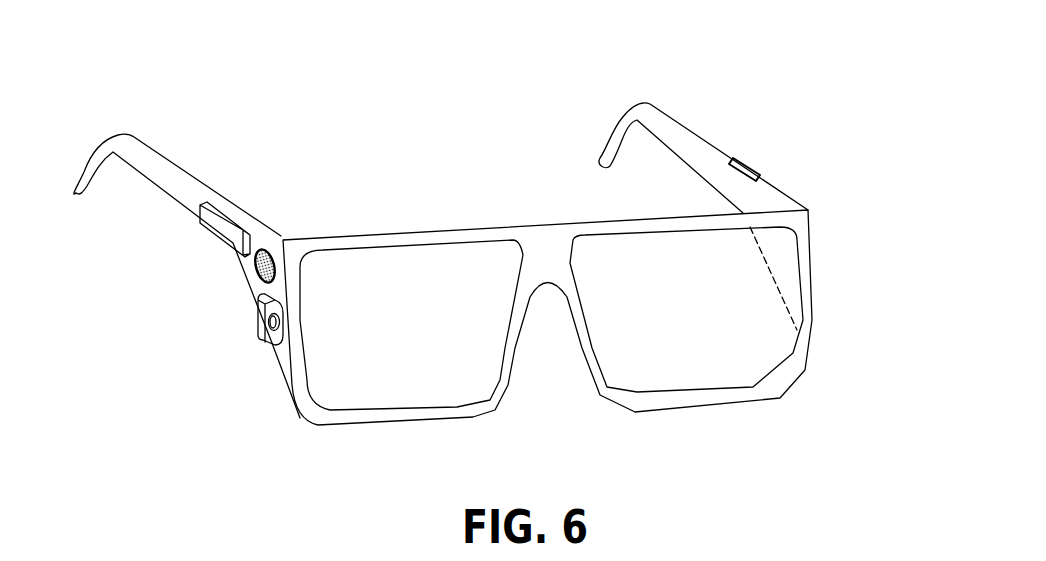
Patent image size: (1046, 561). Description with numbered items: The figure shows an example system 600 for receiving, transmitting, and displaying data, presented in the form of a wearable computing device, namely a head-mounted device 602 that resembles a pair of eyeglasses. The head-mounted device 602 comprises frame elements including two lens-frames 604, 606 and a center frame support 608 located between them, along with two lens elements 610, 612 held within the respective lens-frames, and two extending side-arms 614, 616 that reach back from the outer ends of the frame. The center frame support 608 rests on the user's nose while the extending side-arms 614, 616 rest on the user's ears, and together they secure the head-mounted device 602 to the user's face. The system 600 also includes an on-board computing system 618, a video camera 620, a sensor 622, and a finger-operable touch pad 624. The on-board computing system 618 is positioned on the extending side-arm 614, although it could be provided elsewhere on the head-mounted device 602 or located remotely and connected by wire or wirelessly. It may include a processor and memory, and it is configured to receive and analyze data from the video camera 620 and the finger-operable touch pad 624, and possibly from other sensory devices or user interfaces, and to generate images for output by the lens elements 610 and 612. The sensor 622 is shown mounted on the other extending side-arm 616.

The system 600 is at (475, 278).
The head-mounted device 602 is at (391, 137).
The lens-frame 604 is at (383, 240).
The lens-frame 606 is at (630, 223).
The center frame support 608 is at (547, 248).
The lens element 610 is at (355, 390).
The lens element 612 is at (703, 375).
The extending side-arm 614 is at (220, 210).
The extending side-arm 616 is at (708, 143).
The on-board computing system 618 is at (217, 225).
The video camera 620 is at (257, 312).
The sensor 622 is at (750, 167).
The finger-operable touch pad 624 is at (255, 268).